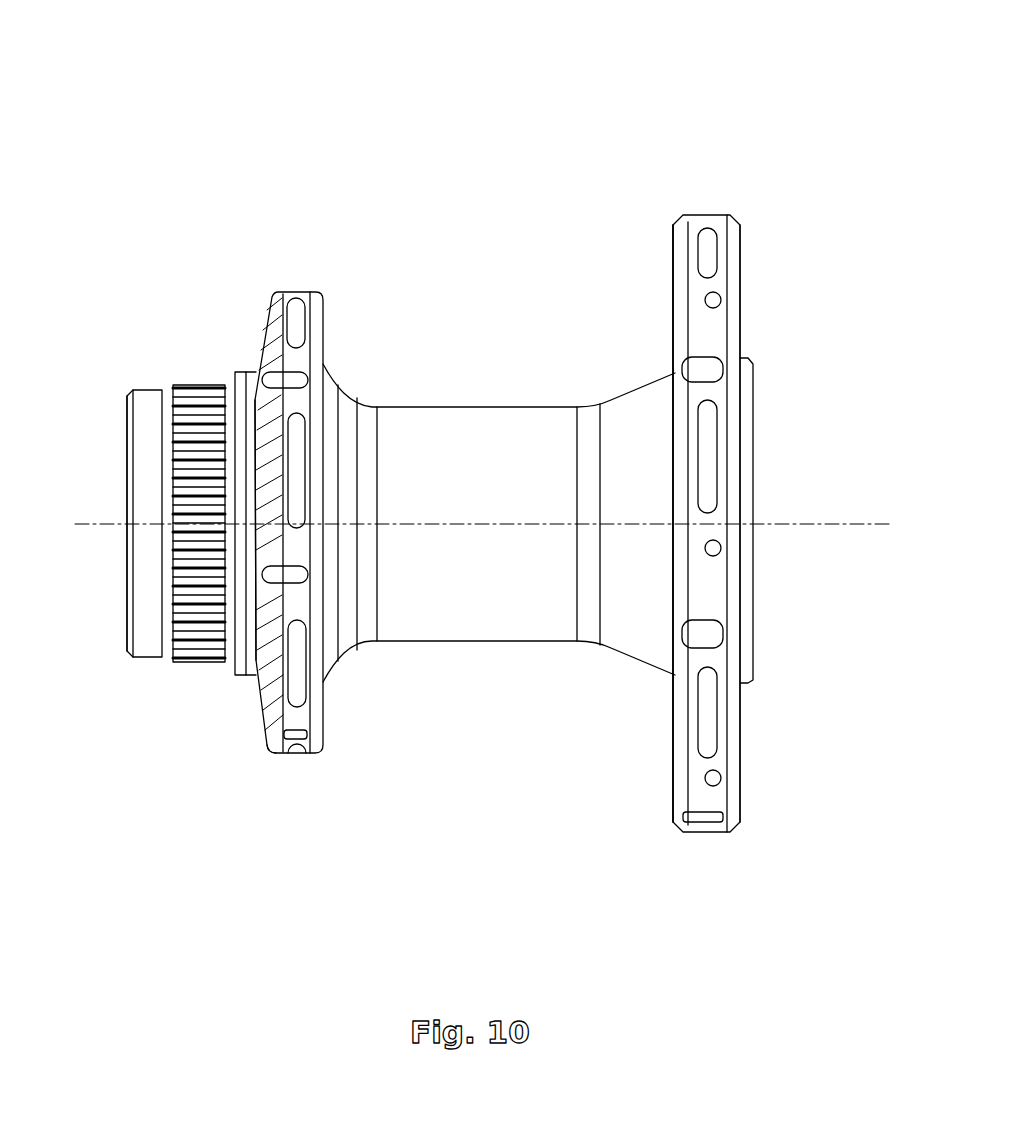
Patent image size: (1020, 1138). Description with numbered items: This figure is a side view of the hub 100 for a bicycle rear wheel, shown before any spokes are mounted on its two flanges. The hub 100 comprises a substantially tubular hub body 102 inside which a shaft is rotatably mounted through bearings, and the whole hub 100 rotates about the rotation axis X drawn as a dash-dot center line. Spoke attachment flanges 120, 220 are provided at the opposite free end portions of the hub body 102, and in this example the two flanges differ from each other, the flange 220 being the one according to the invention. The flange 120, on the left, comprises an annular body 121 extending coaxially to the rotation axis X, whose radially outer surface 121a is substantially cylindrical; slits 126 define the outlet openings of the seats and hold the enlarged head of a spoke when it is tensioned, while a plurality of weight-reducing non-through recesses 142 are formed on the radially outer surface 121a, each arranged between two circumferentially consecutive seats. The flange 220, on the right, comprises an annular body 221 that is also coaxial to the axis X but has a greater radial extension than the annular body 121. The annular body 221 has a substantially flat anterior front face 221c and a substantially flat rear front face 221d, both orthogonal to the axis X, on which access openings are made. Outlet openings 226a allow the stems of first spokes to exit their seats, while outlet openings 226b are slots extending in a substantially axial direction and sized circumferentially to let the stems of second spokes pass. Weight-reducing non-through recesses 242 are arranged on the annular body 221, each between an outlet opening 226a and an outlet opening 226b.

The hub 100 is at (464, 264).
The hub body 102 is at (465, 452).
The flange 120 is at (280, 275).
The annular body 121 is at (266, 756).
The radially outer surface 121a is at (291, 761).
The slit 126 is at (288, 380).
The weight-reducing non-through recesses 142 is at (291, 315).
The flange 220 is at (719, 188).
The annular body 221 is at (674, 777).
The anterior front face 221c is at (740, 273).
The rear front face 221d is at (672, 263).
The outlet opening 226a is at (708, 300).
The outlet opening 226b is at (705, 370).
The weight-reducing non-through recesses 242 is at (710, 252).